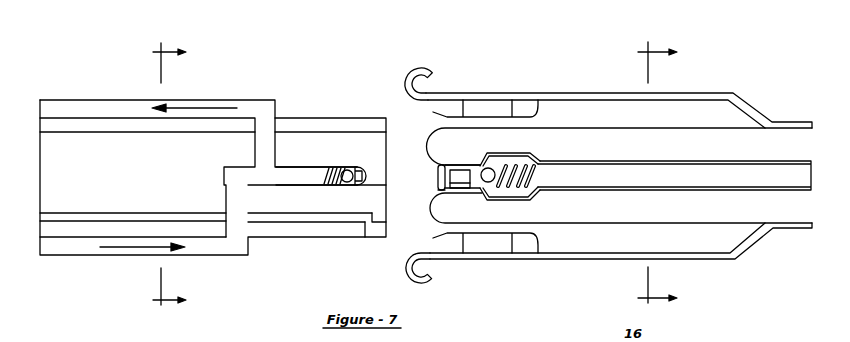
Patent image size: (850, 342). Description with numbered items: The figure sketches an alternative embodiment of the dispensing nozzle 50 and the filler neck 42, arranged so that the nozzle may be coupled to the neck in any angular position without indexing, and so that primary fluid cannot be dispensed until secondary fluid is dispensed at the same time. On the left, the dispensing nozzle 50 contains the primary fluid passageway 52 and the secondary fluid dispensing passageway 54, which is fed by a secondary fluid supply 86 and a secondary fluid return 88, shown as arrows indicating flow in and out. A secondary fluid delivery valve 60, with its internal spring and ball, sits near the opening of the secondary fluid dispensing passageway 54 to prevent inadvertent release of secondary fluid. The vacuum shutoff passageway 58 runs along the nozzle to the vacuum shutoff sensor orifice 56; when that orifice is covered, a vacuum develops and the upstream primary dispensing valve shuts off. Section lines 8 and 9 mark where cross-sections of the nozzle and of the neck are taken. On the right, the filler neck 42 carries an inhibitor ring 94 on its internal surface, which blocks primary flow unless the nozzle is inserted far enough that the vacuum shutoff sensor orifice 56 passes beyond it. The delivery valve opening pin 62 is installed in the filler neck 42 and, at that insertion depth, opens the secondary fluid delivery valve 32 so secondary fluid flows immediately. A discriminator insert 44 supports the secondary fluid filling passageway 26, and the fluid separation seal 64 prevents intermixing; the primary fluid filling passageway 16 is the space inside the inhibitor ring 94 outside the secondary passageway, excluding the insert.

The section line 8- 8 is at (169, 180).
The section line 9- 9 is at (657, 181).
The primary fluid filling passageway 16 is at (580, 238).
The secondary fluid filling passageway 26 is at (747, 177).
The secondary fluid delivery valve 32 is at (516, 185).
The filler neck 42 is at (693, 92).
The discriminator insert 44 is at (668, 203).
The dispensing nozzle 50 is at (213, 149).
The primary fluid passageway 52 is at (83, 169).
The secondary fluid dispensing passageway 54 is at (303, 173).
The vacuum shutoff sensor orifice 56 is at (366, 233).
The vacuum shutoff passageway 58 is at (289, 220).
The secondary fluid delivery valve 60 is at (347, 170).
The delivery valve opening pin 62 is at (448, 182).
The fluid separation seal 64 is at (441, 190).
The secondary fluid supply 86 is at (131, 248).
The secondary fluid return 88 is at (190, 108).
The inhibitor ring 94 is at (538, 100).